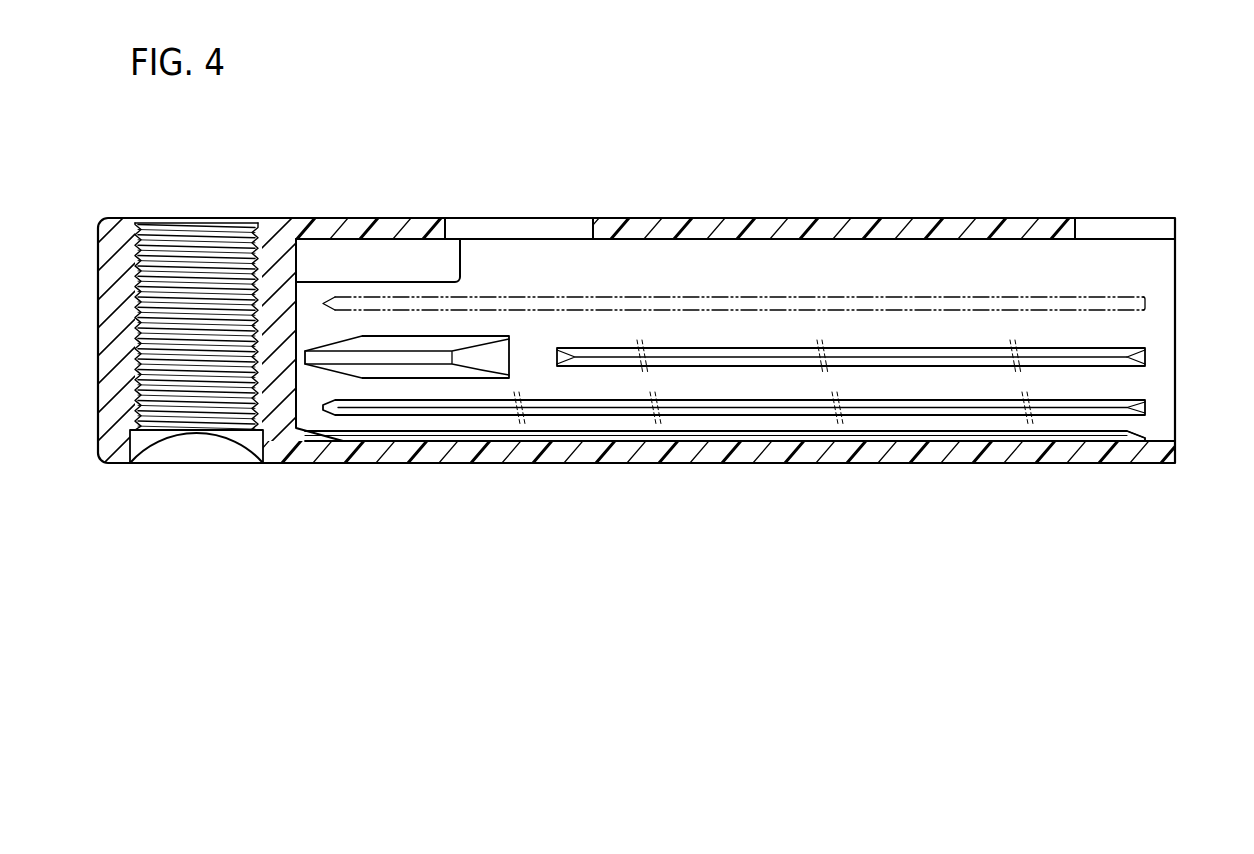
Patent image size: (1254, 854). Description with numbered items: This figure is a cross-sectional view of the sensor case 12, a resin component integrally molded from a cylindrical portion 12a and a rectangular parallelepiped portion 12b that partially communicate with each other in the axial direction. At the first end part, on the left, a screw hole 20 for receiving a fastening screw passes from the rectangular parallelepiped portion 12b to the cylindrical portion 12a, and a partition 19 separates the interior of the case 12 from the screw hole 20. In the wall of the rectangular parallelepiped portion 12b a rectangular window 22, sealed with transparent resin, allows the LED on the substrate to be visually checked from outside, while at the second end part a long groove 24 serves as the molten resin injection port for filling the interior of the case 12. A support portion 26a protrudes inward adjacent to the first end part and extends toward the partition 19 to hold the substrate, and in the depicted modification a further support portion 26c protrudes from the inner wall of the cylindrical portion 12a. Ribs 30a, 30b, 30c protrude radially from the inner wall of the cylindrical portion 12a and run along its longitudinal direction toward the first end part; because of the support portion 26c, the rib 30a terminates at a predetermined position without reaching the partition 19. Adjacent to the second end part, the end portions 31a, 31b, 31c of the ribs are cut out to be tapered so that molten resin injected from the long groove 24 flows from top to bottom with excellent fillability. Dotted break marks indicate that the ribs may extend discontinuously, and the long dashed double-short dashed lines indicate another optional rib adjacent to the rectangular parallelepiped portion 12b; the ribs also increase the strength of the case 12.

The case 12 is at (740, 219).
The cylindrical portion 12a is at (604, 445).
The rectangular parallelepiped portion 12b is at (358, 232).
The partition 19 is at (270, 275).
The screw hole 20 is at (190, 245).
The rectangular window 22 is at (516, 230).
The long groove 24 is at (1117, 228).
The support portion 26a is at (407, 262).
The support portion 26c is at (376, 360).
The rib 30a is at (1098, 357).
The rib 30b is at (1045, 405).
The rib 30c is at (1100, 441).
The end portion 31a is at (1142, 357).
The end portion 31b is at (1142, 408).
The end portion 31c is at (1143, 437).